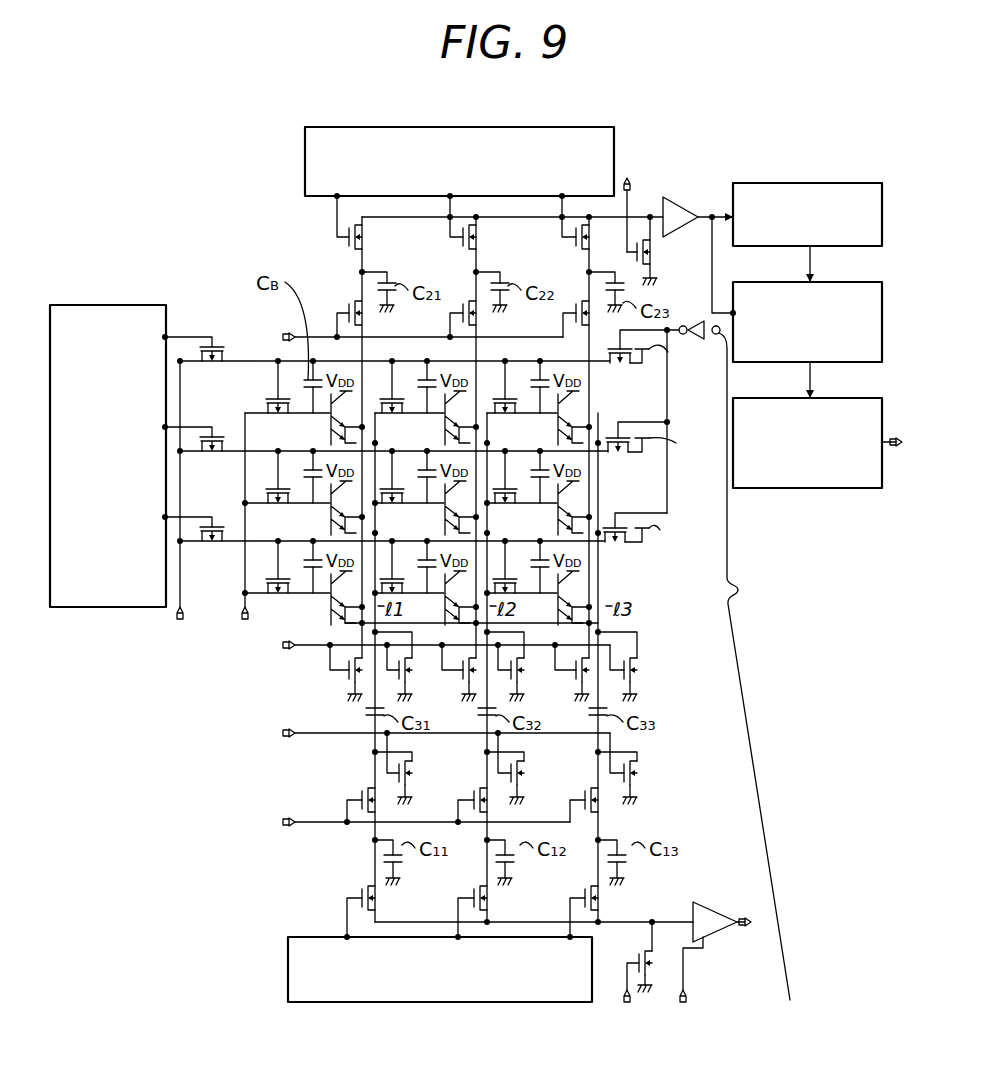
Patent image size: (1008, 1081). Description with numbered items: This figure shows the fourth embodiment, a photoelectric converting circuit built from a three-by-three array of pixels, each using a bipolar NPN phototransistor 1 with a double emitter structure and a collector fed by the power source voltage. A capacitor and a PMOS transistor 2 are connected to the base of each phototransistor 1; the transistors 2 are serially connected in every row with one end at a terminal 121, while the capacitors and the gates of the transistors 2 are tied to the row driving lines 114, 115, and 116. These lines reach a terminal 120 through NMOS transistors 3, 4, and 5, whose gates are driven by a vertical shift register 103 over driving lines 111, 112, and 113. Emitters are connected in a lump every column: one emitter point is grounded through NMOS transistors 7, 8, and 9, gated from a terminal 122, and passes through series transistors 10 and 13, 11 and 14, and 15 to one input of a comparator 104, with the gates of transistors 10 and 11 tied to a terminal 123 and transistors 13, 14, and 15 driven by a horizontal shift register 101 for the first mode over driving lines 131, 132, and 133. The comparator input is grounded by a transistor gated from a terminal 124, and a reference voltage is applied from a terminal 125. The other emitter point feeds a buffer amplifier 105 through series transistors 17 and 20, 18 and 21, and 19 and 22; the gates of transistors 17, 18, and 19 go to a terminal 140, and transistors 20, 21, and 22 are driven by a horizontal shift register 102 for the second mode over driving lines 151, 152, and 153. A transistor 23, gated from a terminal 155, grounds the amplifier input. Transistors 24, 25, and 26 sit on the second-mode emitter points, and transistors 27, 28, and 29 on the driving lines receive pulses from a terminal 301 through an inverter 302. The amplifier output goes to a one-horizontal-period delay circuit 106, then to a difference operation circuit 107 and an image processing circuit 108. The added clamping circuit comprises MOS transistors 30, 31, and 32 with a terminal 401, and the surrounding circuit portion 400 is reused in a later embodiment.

The phototransistor 1 is at (578, 592).
The PMOS transistor 2 is at (276, 393).
The NMOS transistor 3 is at (214, 346).
The NMOS transistor 4 is at (215, 436).
The NMOS transistor 5 is at (216, 526).
The NMOS transistor 7 is at (392, 665).
The NMOS transistor 8 is at (504, 665).
The NMOS transistor 9 is at (616, 665).
The NMOS transistor 10 is at (350, 800).
The NMOS transistor 11 is at (474, 796).
The NMOS transistor 13 is at (586, 796).
The NMOS transistor 14 is at (470, 890).
The NMOS transistor 15 is at (580, 890).
The NMOS transistor 17 is at (350, 303).
The NMOS transistor 18 is at (463, 308).
The NMOS transistor 19 is at (576, 306).
The NMOS transistor 20 is at (348, 243).
The NMOS transistor 21 is at (463, 246).
The NMOS transistor 22 is at (577, 246).
The NMOS transistor 23 is at (637, 265).
The transistor 24 is at (348, 676).
The transistor 25 is at (451, 673).
The transistor 26 is at (565, 673).
The transistor 27 is at (612, 366).
The transistor 28 is at (616, 430).
The transistor 29 is at (610, 525).
The MOS transistor 30 is at (398, 780).
The MOS transistor 31 is at (487, 805).
The MOS transistor 32 is at (605, 812).
The horizontal shift register 101 is at (397, 1002).
The horizontal shift register 102 is at (305, 180).
The vertical shift register 103 is at (140, 305).
The comparator 104 is at (712, 903).
The buffer amplifier 105 is at (686, 205).
The 1H delay circuit 106 is at (850, 183).
The difference operation circuit 107 is at (838, 282).
The image processing circuit 108 is at (858, 488).
The driving line 111 is at (185, 337).
The driving line 112 is at (196, 425).
The driving line 113 is at (196, 515).
The driving line 114 is at (248, 361).
The driving line 115 is at (262, 451).
The driving line 116 is at (262, 541).
The terminal 120 is at (175, 515).
The terminal 121 is at (243, 625).
The terminal 122 is at (283, 645).
The terminal 123 is at (283, 822).
The terminal 124 is at (627, 1003).
The terminal 125 is at (685, 1003).
The driving line 131 is at (347, 910).
The driving line 132 is at (458, 915).
The driving line 133 is at (570, 915).
The terminal 140 is at (286, 330).
The driving line 151 is at (337, 222).
The driving line 152 is at (450, 226).
The driving line 153 is at (562, 226).
The terminal 155 is at (627, 178).
The terminal 301 is at (717, 336).
The inverter 302 is at (679, 327).
The circuit portion 400 is at (754, 666).
The terminal 401 is at (283, 733).